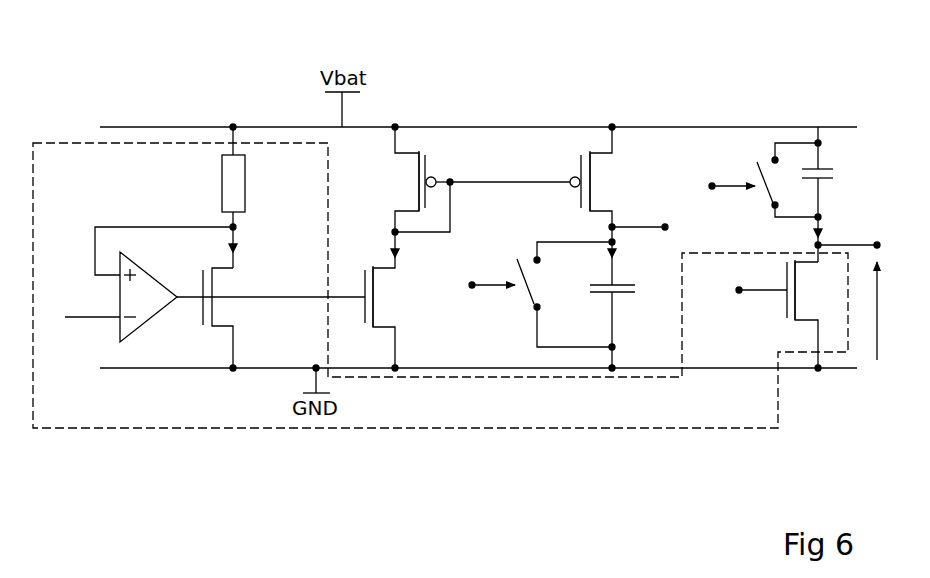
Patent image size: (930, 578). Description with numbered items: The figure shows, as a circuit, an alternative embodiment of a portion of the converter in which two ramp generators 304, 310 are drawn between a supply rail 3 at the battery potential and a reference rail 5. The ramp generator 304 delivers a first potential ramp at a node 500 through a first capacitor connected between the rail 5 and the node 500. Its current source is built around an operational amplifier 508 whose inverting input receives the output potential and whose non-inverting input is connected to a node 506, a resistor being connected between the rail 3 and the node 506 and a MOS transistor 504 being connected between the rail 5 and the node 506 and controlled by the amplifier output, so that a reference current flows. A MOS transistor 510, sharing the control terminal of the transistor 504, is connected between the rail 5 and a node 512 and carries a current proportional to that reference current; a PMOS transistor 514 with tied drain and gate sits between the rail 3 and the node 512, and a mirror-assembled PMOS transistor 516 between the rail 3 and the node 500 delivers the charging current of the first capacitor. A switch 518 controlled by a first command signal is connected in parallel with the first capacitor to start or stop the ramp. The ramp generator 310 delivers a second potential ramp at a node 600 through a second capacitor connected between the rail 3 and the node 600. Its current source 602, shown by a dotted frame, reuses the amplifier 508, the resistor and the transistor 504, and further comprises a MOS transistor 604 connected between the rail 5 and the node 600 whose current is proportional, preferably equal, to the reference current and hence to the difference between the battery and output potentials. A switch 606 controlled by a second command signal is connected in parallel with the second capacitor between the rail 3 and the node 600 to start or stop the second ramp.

The rail 3 is at (837, 127).
The rail 5 is at (842, 371).
The ramp generator 304 is at (508, 71).
The ramp generator 310 is at (781, 71).
The node 500 is at (614, 226).
The MOS transistor 504 is at (216, 282).
The node 506 is at (240, 227).
The operational amplifier 508 is at (118, 293).
The MOS transistor 510 is at (378, 295).
The node 512 is at (393, 232).
The MOS transistor 514 is at (428, 160).
The MOS transistor 516 is at (578, 166).
The circuit (switch) 518 is at (522, 298).
The node 600 is at (822, 243).
The current source 602 is at (697, 432).
The MOS transistor 604 is at (782, 310).
The circuit (switch) 606 is at (772, 160).